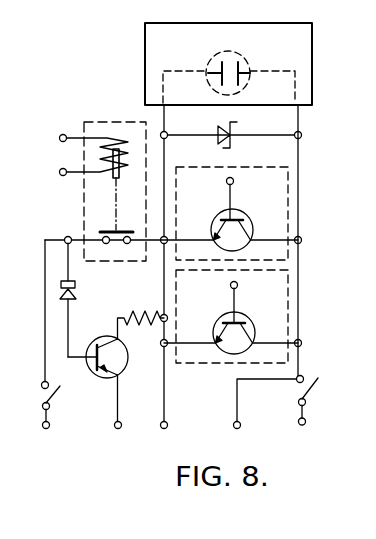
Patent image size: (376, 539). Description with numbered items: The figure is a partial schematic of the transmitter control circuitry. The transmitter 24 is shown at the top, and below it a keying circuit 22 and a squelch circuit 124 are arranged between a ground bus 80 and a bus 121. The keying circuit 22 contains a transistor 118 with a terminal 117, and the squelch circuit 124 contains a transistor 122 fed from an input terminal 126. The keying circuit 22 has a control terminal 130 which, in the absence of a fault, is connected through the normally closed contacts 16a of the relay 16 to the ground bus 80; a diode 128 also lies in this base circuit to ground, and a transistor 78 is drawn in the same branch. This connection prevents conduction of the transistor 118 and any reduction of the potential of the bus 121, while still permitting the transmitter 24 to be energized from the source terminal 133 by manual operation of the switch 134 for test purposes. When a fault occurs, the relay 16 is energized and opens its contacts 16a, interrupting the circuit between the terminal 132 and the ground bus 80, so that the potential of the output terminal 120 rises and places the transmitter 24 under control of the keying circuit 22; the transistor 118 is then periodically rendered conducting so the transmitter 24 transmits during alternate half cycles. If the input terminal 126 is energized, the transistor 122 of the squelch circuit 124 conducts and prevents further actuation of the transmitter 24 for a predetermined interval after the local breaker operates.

The transmitter 24 is at (145, 62).
The relay 16 is at (99, 119).
The normally closed contacts 16a is at (119, 247).
The keying circuit 22 is at (177, 192).
The terminal 117 is at (234, 181).
The transistor 118 is at (242, 202).
The bus 121 is at (300, 212).
The squelch circuit 124 is at (203, 297).
The input terminal 126 is at (238, 285).
The transistor 122 is at (245, 307).
The control terminal 130 is at (66, 238).
The diode 128 is at (78, 291).
The terminal 132 is at (47, 346).
The transistor 78 is at (98, 394).
The ground bus 80 is at (169, 438).
The output terminal 120 is at (261, 416).
The source terminal 133 is at (303, 428).
The switch 134 is at (318, 391).